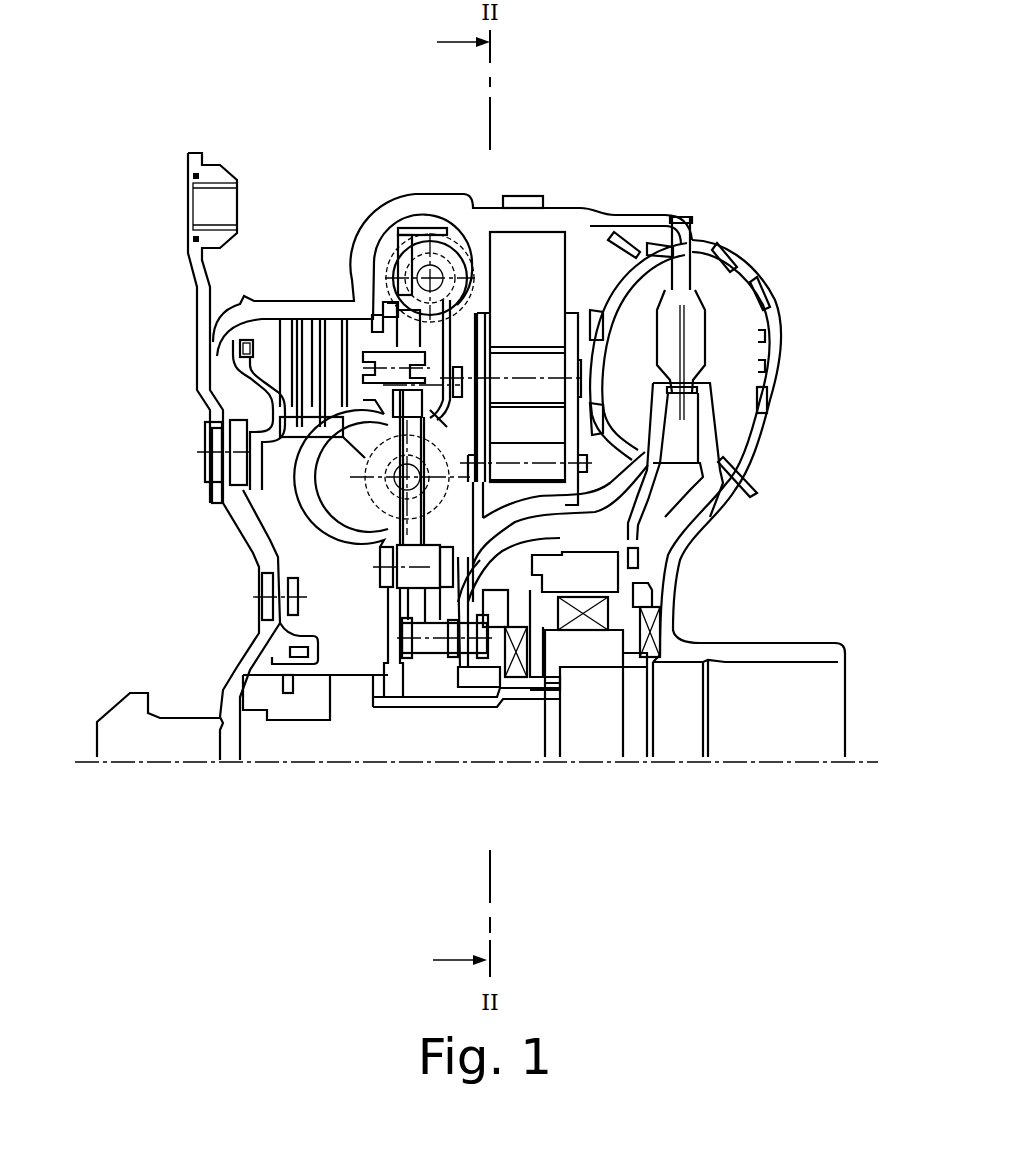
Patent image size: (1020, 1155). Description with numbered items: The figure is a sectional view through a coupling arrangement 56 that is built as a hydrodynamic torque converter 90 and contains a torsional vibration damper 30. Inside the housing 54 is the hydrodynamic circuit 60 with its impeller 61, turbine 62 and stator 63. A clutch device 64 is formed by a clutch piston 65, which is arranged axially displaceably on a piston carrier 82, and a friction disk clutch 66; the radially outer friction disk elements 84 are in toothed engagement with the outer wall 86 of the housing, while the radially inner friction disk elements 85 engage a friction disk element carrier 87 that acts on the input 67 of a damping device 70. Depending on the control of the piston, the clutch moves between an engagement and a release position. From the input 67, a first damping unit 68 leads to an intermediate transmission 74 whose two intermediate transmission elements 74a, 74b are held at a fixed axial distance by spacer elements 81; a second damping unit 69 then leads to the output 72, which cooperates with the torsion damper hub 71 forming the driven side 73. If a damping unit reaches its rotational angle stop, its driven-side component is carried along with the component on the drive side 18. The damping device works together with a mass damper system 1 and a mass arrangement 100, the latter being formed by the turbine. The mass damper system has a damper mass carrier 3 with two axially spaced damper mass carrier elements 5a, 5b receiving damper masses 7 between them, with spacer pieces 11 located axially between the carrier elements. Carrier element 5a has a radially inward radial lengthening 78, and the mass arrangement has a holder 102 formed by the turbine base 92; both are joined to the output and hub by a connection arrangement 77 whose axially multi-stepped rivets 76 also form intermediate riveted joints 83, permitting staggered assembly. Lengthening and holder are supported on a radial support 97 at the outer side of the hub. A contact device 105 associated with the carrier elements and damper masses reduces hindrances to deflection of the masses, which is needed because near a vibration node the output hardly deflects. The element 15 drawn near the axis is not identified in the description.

The mass damper system 1 is at (540, 257).
The damper mass carrier 3 is at (548, 680).
The damper mass carrier element 5a is at (517, 650).
The damper mass carrier element 5b is at (655, 430).
The damper masses 7 is at (548, 278).
The spacer pieces 11 is at (703, 517).
The transmission input part 15 is at (118, 765).
The drive side 18 is at (488, 200).
The torsional vibration damper 30 is at (410, 212).
The housing 54 is at (757, 298).
The coupling arrangement 56 is at (790, 370).
The hydrodynamic circuit 60 is at (680, 290).
The impeller 61 is at (743, 345).
The turbine 62 is at (693, 313).
The stator 63 is at (687, 417).
The clutch device 64 is at (298, 296).
The clutch piston 65 is at (255, 477).
The friction disk clutch 66 is at (240, 348).
The input 67 is at (492, 330).
The first damping unit 68 is at (395, 290).
The second damping unit 69 is at (252, 597).
The damping device 70 is at (325, 465).
The torsion damper hub 71 is at (430, 660).
The output 72 is at (418, 640).
The driven side 73 is at (462, 690).
The intermediate transmission 74 is at (405, 335).
The intermediate transmission element 74a is at (330, 497).
The intermediate transmission element 74b is at (478, 228).
The axially multi-stepped rivets 76 is at (390, 640).
The connection arrangement 77 is at (425, 700).
The radial lengthening 78 is at (378, 513).
The spacer elements 81 is at (423, 582).
The piston carrier 82 is at (310, 643).
The intermediate riveted joints 83 is at (445, 690).
The radially outer friction disk elements 84 is at (307, 340).
The radially inner friction disk elements 85 is at (300, 418).
The outer wall 86 is at (267, 313).
The friction disk element carrier 87 is at (205, 447).
The hydrodynamic torque converter 90 is at (692, 600).
The turbine base 92 is at (583, 630).
The radial support 97 is at (478, 640).
The mass arrangement 100 is at (685, 290).
The holder 102 is at (535, 472).
The contact device 105 is at (703, 240).